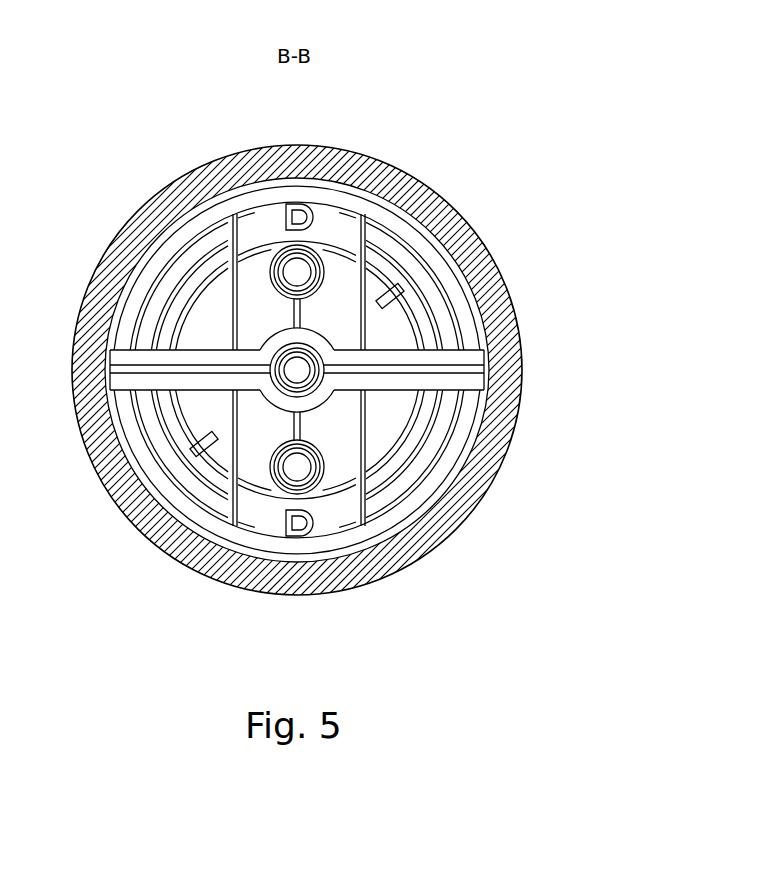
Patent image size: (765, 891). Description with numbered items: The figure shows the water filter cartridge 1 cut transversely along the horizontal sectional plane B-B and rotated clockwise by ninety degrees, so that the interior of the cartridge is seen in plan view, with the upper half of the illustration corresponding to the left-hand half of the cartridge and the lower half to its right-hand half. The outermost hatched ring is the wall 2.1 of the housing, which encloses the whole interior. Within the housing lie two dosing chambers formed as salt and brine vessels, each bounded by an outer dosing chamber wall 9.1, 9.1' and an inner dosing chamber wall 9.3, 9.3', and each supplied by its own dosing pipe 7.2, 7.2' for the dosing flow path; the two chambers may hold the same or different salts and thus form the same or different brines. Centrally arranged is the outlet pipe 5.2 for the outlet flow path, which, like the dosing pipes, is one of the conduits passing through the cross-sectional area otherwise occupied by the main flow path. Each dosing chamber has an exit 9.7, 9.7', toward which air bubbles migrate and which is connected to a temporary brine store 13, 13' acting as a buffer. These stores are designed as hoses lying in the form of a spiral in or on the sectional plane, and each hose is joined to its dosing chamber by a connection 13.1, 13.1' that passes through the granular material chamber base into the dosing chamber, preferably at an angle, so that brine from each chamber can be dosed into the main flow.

The water filter cartridge 1 is at (206, 98).
The wall 2.1 is at (352, 165).
The outlet pipe 5.2 is at (140, 512).
The dosing pipe 7.2 is at (202, 238).
The dosing pipe 7.2' is at (336, 531).
The outer dosing chamber wall 9.1 is at (309, 242).
The outer dosing chamber wall 9.1' is at (297, 521).
The inner dosing chamber wall 9.3 is at (352, 352).
The inner dosing chamber wall 9.3' is at (379, 402).
The exit of the dosing chamber 9.7 is at (359, 344).
The exit of the dosing chamber 9.7' is at (261, 435).
The temporary brine store 13 is at (231, 370).
The temporary brine store 13' is at (370, 378).
The connection of the hose 13.1 is at (315, 159).
The connection of the hose 13.1' is at (285, 590).